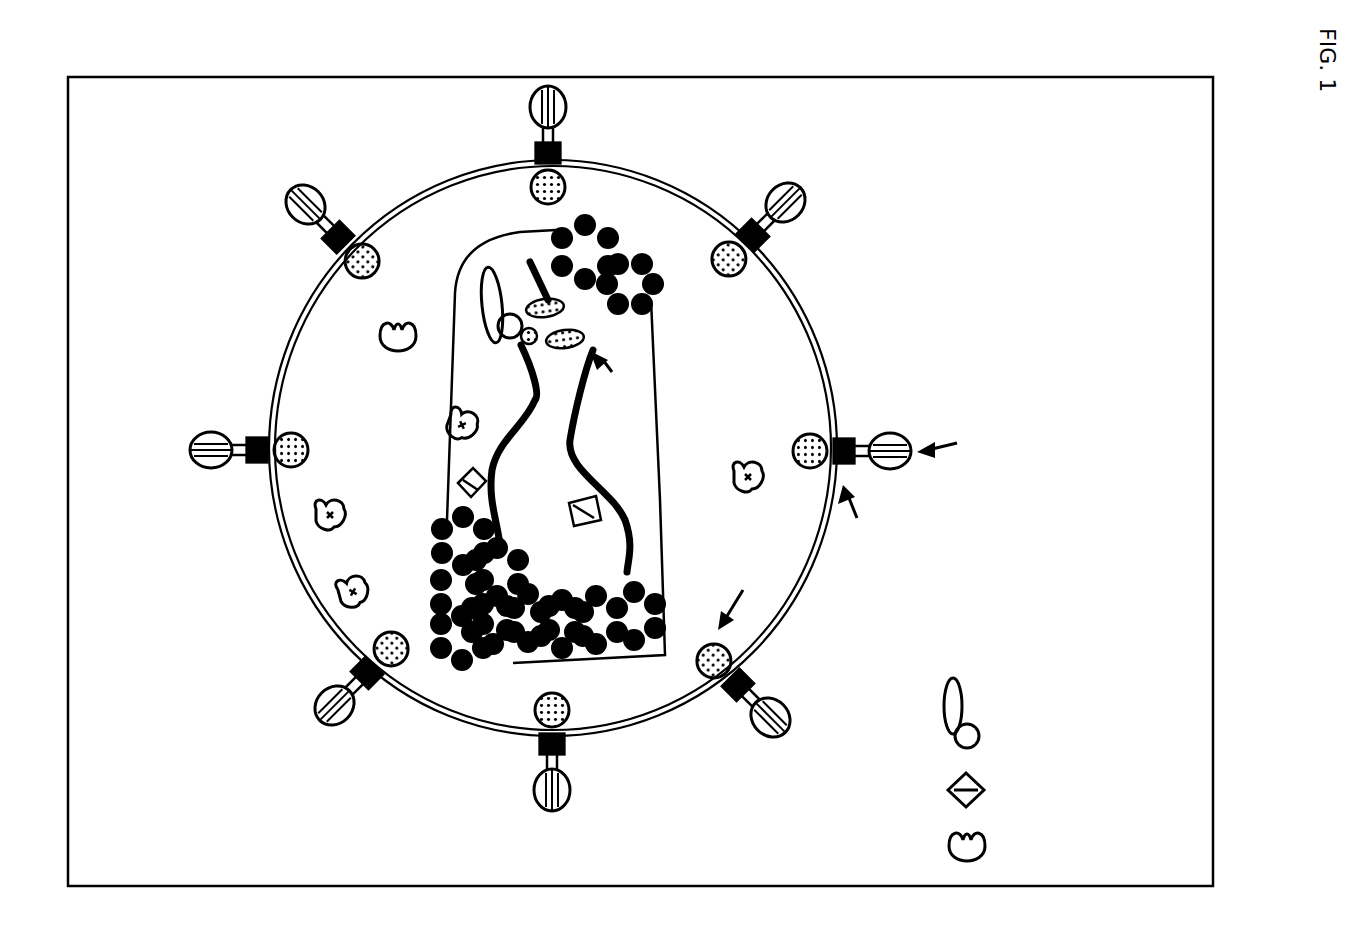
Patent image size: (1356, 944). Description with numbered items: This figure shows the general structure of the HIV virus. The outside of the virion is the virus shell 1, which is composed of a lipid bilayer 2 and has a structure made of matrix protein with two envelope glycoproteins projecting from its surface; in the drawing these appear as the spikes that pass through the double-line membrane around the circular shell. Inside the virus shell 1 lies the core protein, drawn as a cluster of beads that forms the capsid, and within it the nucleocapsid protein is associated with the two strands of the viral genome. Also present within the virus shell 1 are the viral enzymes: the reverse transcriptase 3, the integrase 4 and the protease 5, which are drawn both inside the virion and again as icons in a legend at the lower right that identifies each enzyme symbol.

The virus shell 1 is at (695, 473).
The lipid bilayer 2 is at (821, 584).
The reverse transcriptase 3 is at (839, 507).
The integrase 4 is at (804, 637).
The protease 5 is at (728, 592).